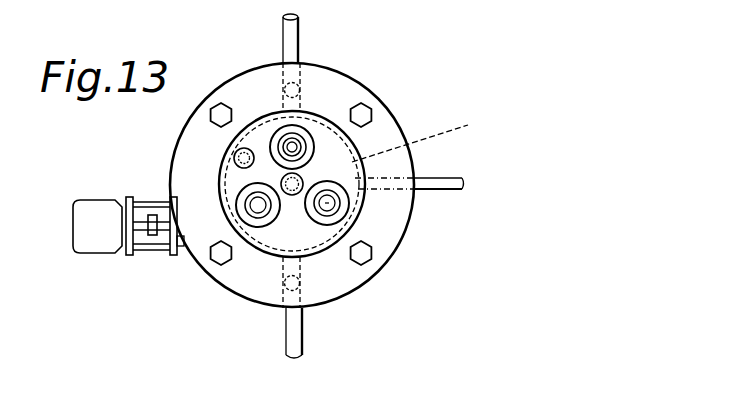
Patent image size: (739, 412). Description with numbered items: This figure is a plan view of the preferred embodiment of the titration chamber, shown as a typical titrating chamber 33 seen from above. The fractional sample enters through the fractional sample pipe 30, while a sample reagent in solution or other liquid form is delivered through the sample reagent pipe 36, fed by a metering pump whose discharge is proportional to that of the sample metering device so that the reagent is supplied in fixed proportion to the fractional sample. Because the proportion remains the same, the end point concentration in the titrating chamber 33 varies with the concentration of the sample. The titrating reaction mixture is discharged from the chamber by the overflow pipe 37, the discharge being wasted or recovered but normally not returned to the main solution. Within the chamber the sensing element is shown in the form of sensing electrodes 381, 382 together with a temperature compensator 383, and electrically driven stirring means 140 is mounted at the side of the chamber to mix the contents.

The fractional sample pipe 30 is at (300, 38).
The sample reagent pipe 36 is at (303, 337).
The overflow pipe 37 is at (438, 180).
The titrating chamber 33 is at (422, 139).
The sensing electrode 382 is at (300, 140).
The sensing electrode 381 is at (260, 209).
The temperature compensator 383 is at (337, 204).
The electrically driven stirring means 140 is at (110, 235).